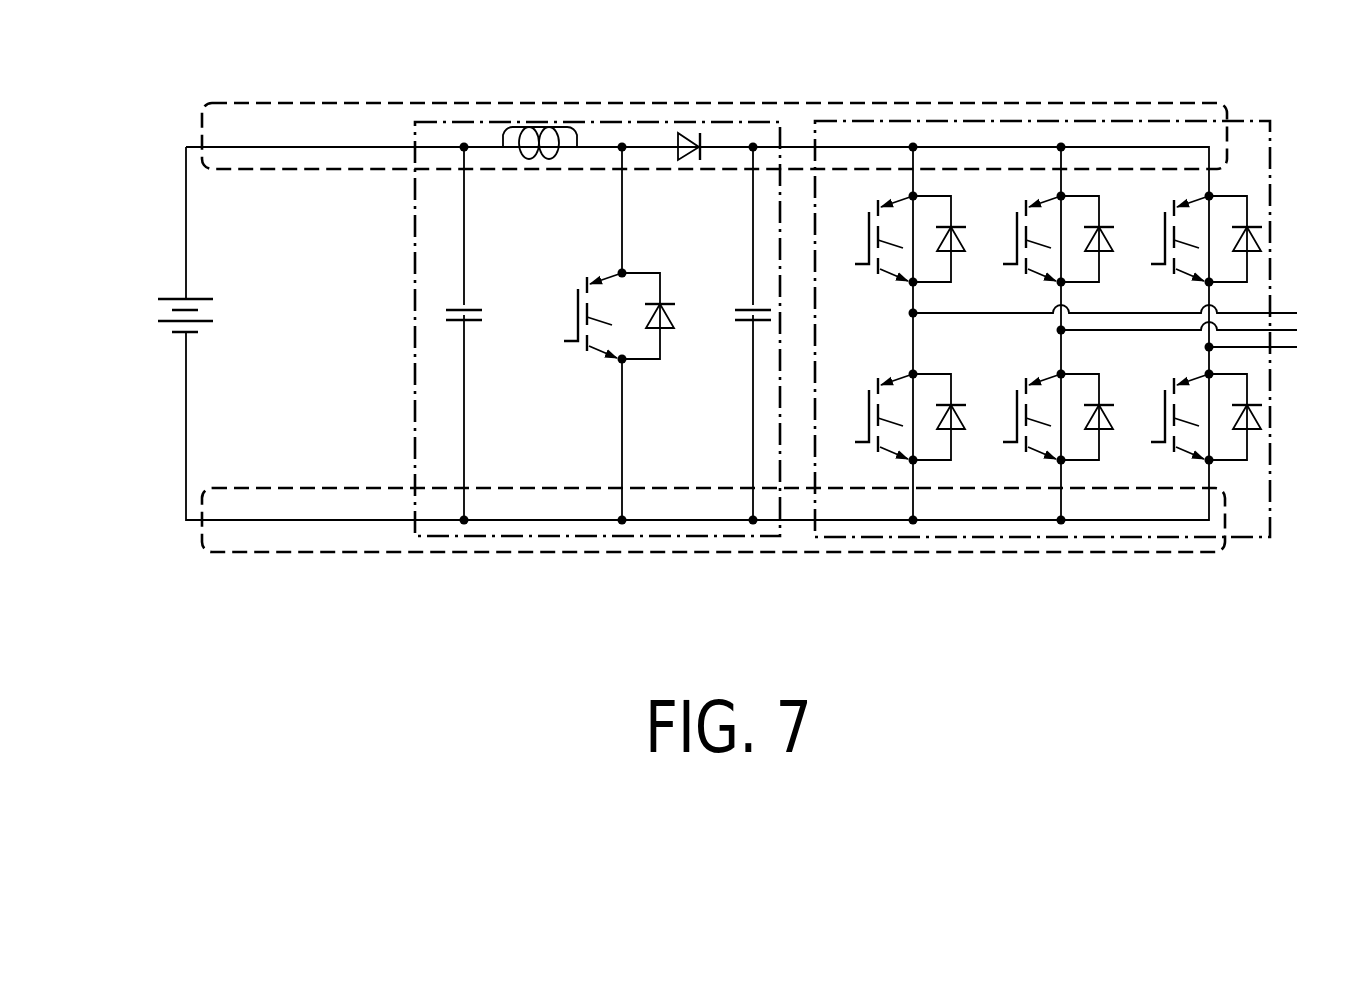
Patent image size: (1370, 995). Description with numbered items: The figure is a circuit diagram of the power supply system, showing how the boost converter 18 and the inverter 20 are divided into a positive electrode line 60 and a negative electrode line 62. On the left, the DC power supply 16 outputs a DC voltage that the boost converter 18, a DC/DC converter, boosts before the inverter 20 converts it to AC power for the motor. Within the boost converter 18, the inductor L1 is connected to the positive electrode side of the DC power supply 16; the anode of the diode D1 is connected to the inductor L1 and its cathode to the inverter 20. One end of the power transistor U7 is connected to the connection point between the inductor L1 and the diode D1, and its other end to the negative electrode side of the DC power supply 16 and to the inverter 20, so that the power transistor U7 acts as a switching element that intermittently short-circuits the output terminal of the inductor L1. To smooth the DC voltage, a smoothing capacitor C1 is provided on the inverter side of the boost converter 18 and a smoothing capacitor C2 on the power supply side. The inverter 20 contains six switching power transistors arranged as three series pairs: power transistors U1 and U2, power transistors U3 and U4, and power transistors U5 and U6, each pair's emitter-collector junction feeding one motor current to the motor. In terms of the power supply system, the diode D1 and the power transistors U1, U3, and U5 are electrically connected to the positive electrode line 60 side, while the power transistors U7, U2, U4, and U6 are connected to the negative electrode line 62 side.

The DC power supply 16 is at (160, 288).
The boost converter 18 is at (413, 222).
The inverter 20 is at (1273, 168).
The positive electrode line 60 is at (396, 102).
The negative electrode line 62 is at (365, 553).
The inductor L1 is at (511, 160).
The power transistor U7 is at (578, 270).
The diode D1 is at (689, 165).
The smoothing capacitor C1 is at (741, 333).
The smoothing capacitor C2 is at (480, 333).
The power transistor U1 is at (856, 239).
The power transistor U2 is at (860, 370).
The power transistor U3 is at (1001, 239).
The power transistor U4 is at (1010, 381).
The power transistor U5 is at (1149, 239).
The power transistor U6 is at (1158, 382).